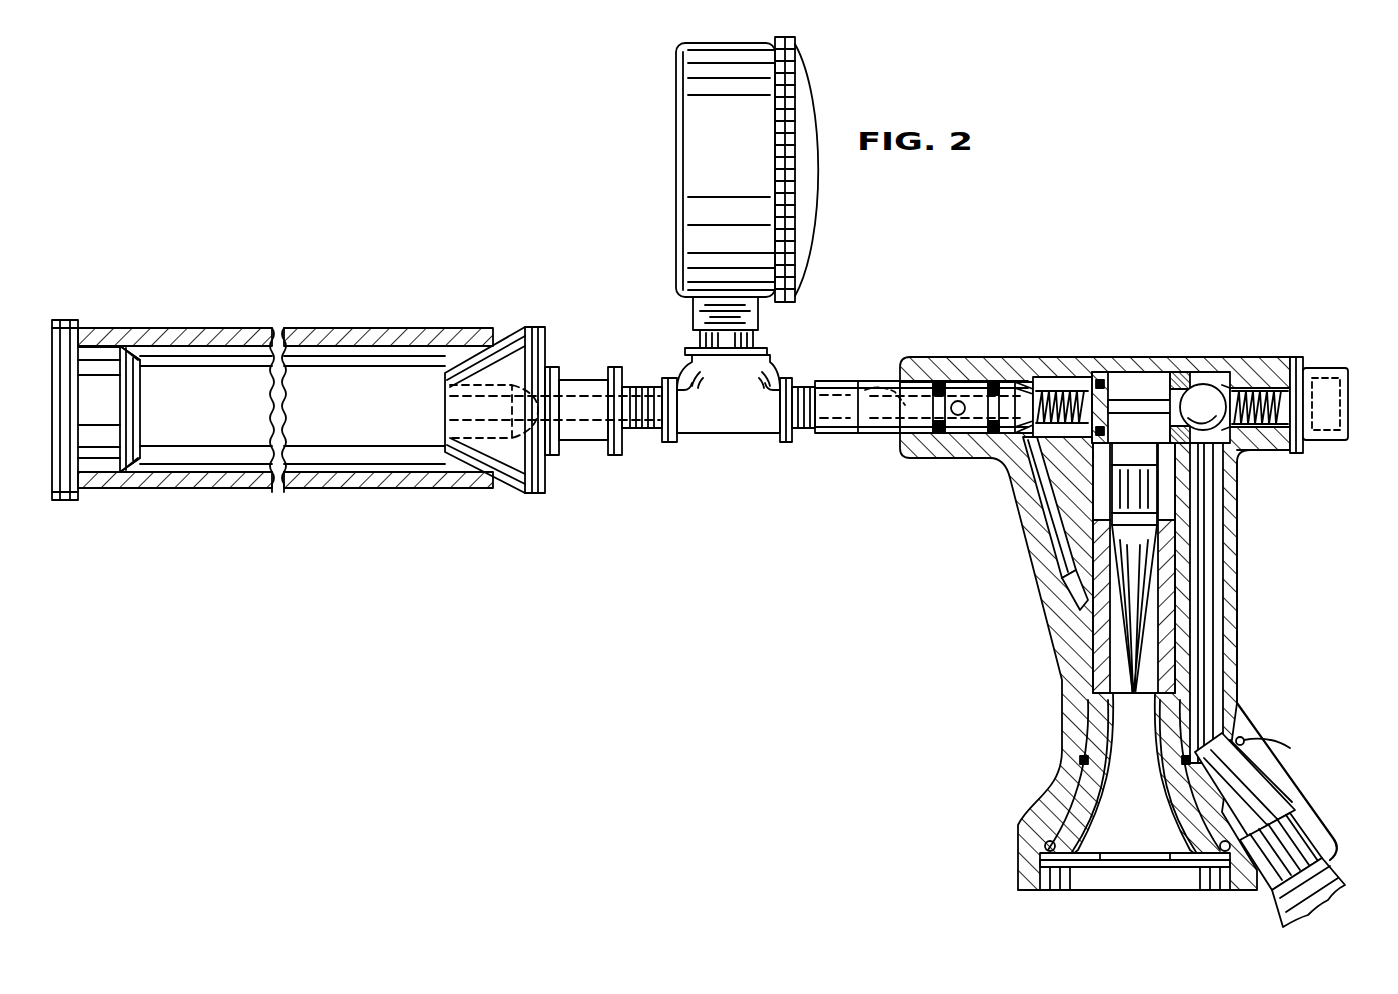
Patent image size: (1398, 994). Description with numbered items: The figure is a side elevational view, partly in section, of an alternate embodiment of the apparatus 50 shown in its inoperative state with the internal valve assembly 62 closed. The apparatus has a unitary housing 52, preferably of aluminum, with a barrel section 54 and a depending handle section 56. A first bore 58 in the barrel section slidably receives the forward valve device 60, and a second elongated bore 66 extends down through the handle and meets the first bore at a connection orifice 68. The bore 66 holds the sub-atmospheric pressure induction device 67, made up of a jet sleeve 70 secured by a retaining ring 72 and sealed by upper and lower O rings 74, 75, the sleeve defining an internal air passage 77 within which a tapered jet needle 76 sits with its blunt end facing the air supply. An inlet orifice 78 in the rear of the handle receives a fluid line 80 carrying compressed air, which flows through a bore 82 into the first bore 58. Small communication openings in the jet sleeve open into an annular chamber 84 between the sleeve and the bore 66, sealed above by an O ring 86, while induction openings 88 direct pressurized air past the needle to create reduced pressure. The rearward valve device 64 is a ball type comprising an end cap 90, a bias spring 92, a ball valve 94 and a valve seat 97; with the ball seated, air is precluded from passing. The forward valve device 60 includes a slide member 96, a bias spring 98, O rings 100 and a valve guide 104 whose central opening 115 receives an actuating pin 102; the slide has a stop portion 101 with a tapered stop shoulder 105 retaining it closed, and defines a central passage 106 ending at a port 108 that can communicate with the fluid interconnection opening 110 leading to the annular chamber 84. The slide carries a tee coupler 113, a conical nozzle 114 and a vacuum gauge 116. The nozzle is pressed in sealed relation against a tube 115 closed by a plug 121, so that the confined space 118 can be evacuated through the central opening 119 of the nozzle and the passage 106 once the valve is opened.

The apparatus 50 is at (999, 252).
The unitary housing 52 is at (1268, 357).
The barrel section 54 is at (905, 358).
The handle section 56 is at (1232, 620).
The first bore 58 is at (885, 430).
The forward valve device 60 is at (1026, 390).
The internal valve assembly 62 is at (1093, 370).
The rearwardly positioned valve device 64 is at (1222, 383).
The second elongated bore 66 is at (1196, 672).
The sub-atmospheric pressure induction device 67 is at (1094, 622).
The connection orifice 68 is at (1158, 410).
The jet sleeve 70 is at (1100, 724).
The retaining ring 72 is at (1040, 864).
The upper O ring 74 is at (1080, 760).
The lower O ring 75 is at (1045, 846).
The tapered jet needle 76 is at (1108, 660).
The internal air passage 77 is at (1152, 823).
The inlet orifice 78 is at (1242, 760).
The fluid line 80 is at (1322, 877).
The bore 82 is at (1244, 737).
The annular chamber 84 is at (1094, 605).
The O ring 86 is at (1174, 540).
The induction openings 88 is at (1070, 542).
The end cap 90 is at (1346, 376).
The bias spring 92 is at (1296, 374).
The ball valve 94 is at (1204, 390).
The slide member 96 is at (828, 386).
The valve seat 97 is at (1185, 372).
The bias spring 98 is at (1030, 446).
The O rings 100 is at (990, 382).
The stop portion 101 is at (990, 442).
The actuating pin 102 is at (1255, 452).
The valve guide 104 is at (1134, 478).
The tapered stop shoulder 105 is at (1003, 388).
The central passage 106 is at (862, 392).
The port 108 is at (957, 400).
The fluid interconnection opening 110 is at (1045, 498).
The tee coupler 113 is at (720, 430).
The conical nozzle 114 is at (520, 478).
The tube 115 is at (398, 483).
The vacuum gauge 116 is at (686, 160).
The confined space 118 is at (333, 458).
The central opening 119 is at (590, 416).
The plug 121 is at (100, 458).